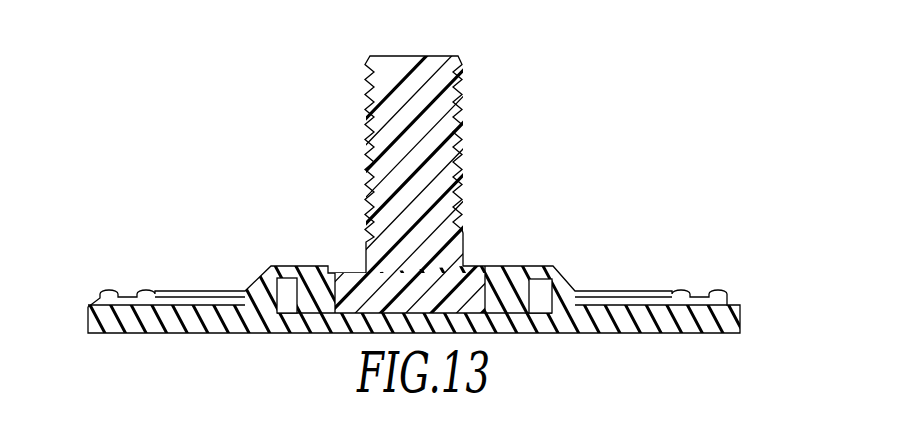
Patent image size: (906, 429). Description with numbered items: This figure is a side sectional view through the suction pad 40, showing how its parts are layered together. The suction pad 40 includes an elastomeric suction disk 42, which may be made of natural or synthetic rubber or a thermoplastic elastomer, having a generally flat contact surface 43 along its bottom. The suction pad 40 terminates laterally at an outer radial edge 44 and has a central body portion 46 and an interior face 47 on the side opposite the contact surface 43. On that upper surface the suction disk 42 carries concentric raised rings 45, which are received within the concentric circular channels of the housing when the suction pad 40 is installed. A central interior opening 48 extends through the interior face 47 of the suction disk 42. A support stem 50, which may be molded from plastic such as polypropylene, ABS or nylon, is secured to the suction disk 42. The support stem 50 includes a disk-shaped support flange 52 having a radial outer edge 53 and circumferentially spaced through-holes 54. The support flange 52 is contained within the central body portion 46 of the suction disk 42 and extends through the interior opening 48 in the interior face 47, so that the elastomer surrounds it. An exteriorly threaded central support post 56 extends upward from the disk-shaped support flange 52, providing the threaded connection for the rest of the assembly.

The suction pad 40 is at (212, 118).
The suction disk 42 is at (212, 290).
The contact surface 43 is at (203, 336).
The outer radial edge 44 is at (88, 320).
The concentric raised rings 45 is at (147, 292).
The central body portion 46 is at (262, 298).
The interior face 47 is at (320, 265).
The central interior opening 48 is at (352, 267).
The support stem 50 is at (455, 252).
The support flange 52 is at (491, 298).
The radial outer edge 53 is at (553, 285).
The through-holes 54 is at (498, 310).
The central support post 56 is at (442, 105).